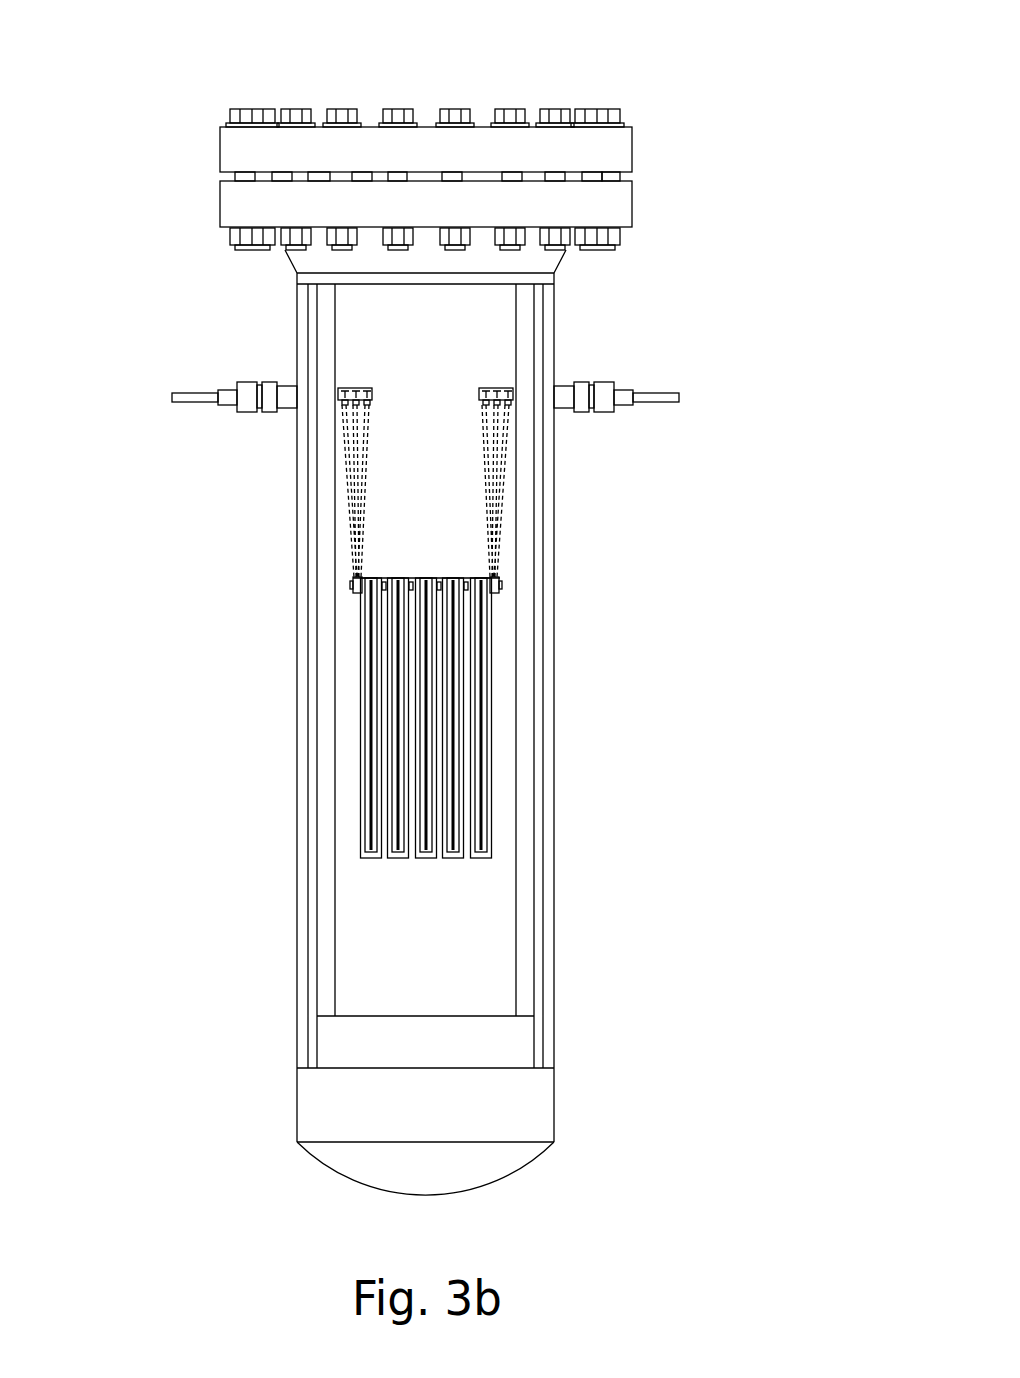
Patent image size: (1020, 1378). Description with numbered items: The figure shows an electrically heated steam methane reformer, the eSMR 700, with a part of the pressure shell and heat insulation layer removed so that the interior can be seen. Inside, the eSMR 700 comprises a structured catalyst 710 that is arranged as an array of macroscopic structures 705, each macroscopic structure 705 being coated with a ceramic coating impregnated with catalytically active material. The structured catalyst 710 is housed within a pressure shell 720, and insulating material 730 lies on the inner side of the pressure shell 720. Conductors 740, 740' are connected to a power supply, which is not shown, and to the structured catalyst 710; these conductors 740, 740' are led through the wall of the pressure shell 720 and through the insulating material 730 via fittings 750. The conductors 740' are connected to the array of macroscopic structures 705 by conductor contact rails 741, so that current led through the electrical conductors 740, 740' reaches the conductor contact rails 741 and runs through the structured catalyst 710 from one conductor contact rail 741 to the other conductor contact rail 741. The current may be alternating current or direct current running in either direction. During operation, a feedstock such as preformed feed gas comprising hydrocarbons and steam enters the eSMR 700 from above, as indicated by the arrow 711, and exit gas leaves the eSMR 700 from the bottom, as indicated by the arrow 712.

The eSMR 700 is at (623, 322).
The macroscopic structures 705 is at (479, 864).
The structured catalyst 710 is at (437, 552).
The arrow indicating feedstock entry 711 is at (425, 0).
The arrow indicating exit gas 712 is at (425, 1195).
The pressure shell 720 is at (558, 905).
The insulating material 730 is at (544, 598).
The conductors 740 is at (212, 351).
The conductors 740' is at (425, 452).
The conductor contact rails 741 is at (362, 574).
The fittings 750 is at (620, 420).